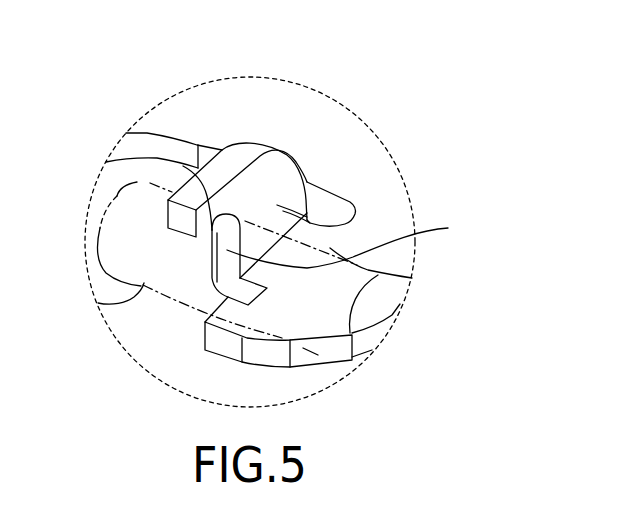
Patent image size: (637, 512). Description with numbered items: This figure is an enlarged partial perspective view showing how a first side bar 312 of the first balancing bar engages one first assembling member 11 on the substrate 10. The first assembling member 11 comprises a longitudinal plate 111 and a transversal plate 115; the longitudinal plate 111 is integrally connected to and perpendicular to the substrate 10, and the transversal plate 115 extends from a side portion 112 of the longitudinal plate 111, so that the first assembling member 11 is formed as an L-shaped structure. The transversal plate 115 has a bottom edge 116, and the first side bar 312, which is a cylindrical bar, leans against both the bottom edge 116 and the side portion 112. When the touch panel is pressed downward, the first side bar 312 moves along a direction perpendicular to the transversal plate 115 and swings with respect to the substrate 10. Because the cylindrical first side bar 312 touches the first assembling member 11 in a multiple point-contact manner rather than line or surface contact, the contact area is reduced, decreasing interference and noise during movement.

The substrate 10 is at (308, 368).
The first assembling member 11 is at (242, 140).
The longitudinal plate 111 is at (310, 213).
The side portion 112 is at (361, 241).
The transversal plate 115 is at (197, 167).
The bottom edge 116 is at (210, 232).
The first side bar 312 is at (100, 305).